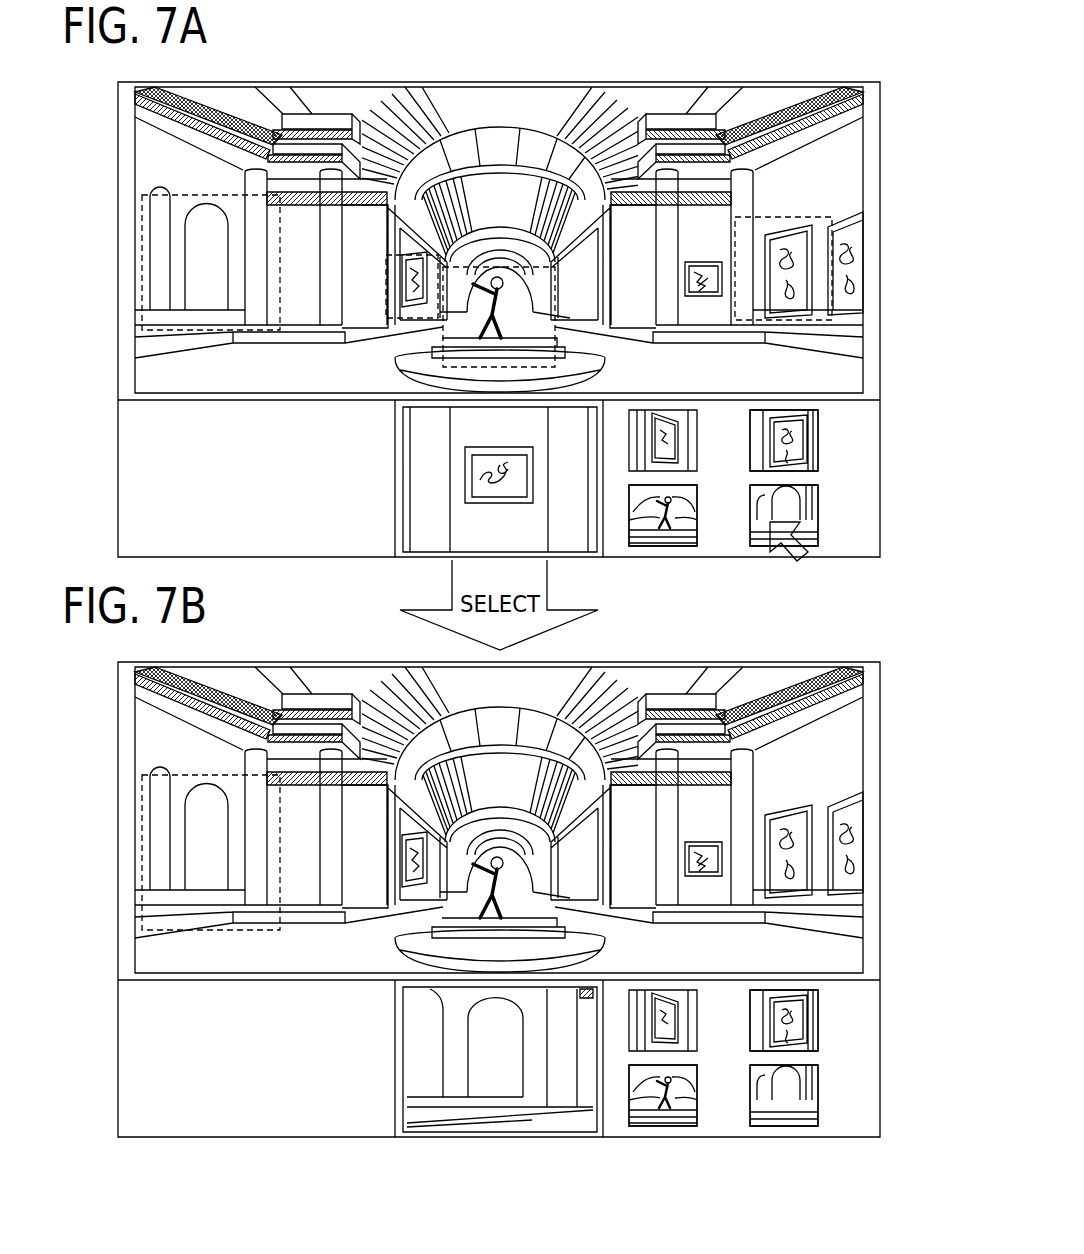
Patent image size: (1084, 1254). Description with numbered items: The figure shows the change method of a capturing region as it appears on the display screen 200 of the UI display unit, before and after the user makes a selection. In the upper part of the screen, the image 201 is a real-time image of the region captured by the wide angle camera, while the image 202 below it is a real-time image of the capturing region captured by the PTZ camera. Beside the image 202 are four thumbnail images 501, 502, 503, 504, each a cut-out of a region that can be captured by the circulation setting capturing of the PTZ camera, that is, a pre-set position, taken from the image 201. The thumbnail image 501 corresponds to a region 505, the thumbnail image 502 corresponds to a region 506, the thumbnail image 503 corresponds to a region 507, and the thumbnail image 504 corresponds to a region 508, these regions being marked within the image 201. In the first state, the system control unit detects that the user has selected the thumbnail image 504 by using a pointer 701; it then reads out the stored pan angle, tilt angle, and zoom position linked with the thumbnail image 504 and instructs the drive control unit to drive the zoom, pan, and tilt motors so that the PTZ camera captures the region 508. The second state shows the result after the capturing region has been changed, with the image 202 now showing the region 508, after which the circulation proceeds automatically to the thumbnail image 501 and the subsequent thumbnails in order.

In FIG. 7A, the display screen 200 is at (882, 127).
In FIG. 7B, the display screen 200 is at (535, 899).
In FIG. 7A, the image 201 is at (864, 196).
In FIG. 7B, the image 201 is at (544, 820).
In FIG. 7A, the image 202 is at (402, 440).
In FIG. 7A, the thumbnail image 501 is at (685, 442).
In FIG. 7B, the thumbnail image 501 is at (723, 1085).
In FIG. 7A, the thumbnail image 502 is at (807, 433).
In FIG. 7B, the thumbnail image 502 is at (851, 1020).
In FIG. 7A, the thumbnail image 503 is at (690, 512).
In FIG. 7B, the thumbnail image 503 is at (706, 1142).
In FIG. 7A, the thumbnail image 504 is at (797, 508).
In FIG. 7B, the thumbnail image 504 is at (851, 1095).
In FIG. 7A, the region 505 is at (417, 307).
In FIG. 7A, the region 506 is at (797, 217).
In FIG. 7A, the region 507 is at (557, 325).
In FIG. 7A, the region 508 is at (142, 257).
In FIG. 7B, the region 508 is at (162, 852).
In FIG. 7A, the pointer 701 is at (812, 556).